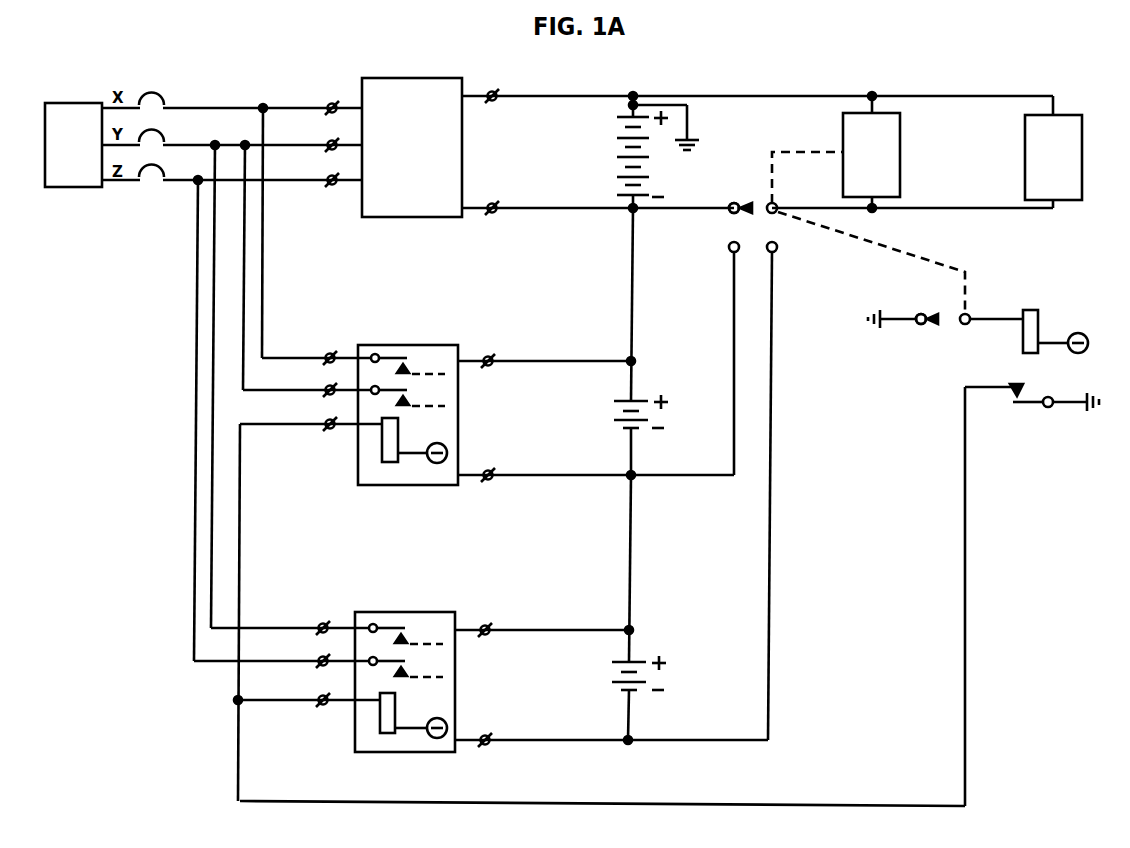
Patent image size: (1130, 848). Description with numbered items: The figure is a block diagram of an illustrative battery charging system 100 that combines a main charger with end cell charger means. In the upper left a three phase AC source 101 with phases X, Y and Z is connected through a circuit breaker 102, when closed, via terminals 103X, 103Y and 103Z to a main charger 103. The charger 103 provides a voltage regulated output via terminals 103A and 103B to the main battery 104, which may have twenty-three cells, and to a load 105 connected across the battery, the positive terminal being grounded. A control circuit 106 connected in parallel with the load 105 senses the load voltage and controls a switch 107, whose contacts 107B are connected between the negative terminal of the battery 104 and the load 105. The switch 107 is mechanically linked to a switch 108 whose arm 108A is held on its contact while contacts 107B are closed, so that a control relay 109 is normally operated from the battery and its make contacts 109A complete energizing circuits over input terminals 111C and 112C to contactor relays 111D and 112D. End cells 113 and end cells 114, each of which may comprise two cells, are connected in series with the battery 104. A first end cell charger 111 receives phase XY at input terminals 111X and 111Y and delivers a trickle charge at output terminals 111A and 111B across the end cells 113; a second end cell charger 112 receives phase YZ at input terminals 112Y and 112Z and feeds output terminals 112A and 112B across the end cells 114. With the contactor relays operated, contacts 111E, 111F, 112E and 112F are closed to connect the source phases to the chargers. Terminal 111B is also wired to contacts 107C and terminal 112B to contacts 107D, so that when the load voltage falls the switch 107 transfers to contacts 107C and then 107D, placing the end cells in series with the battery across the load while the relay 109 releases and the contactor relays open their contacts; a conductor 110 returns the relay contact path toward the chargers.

The battery charging system 100 is at (124, 343).
The three phase AC source 101 is at (52, 90).
The circuit breaker 102 is at (176, 95).
The main charger 103 is at (429, 76).
The terminal 103X is at (303, 100).
The terminal 103Y is at (303, 137).
The terminal 103Z is at (303, 172).
The terminal 103A is at (757, 84).
The terminal 103B is at (598, 197).
The main battery 104 is at (608, 160).
The load 105 is at (1082, 155).
The control circuit means 106 is at (901, 150).
The switch 107 is at (764, 198).
The contacts 107B is at (729, 217).
The contacts 107C is at (728, 251).
The contacts 107D is at (776, 251).
The switch 108 is at (960, 312).
The arm 108A is at (912, 329).
The control relay 109 is at (1041, 321).
The contacts 109A is at (1063, 389).
The conductor 110 is at (967, 455).
The first end cell charger 111 is at (418, 344).
The input terminal 111X is at (316, 352).
The input terminal 111Y is at (307, 384).
The input terminal 111C is at (310, 602).
The output terminal 111A is at (544, 352).
The output terminal 111B is at (596, 467).
The contactor relay 111D is at (414, 440).
The contacts 111E is at (408, 363).
The contacts 111F is at (408, 395).
The second end cell charger 112 is at (419, 606).
The input terminal 112Y is at (290, 621).
The input terminal 112Z is at (281, 654).
The input terminal 112C is at (307, 692).
The output terminal 112A is at (542, 617).
The output terminal 112B is at (611, 730).
The contactor relay 112D is at (413, 715).
The contacts 112E is at (406, 633).
The contacts 112F is at (406, 666).
The end cells 113 is at (611, 430).
The end cells 114 is at (609, 694).